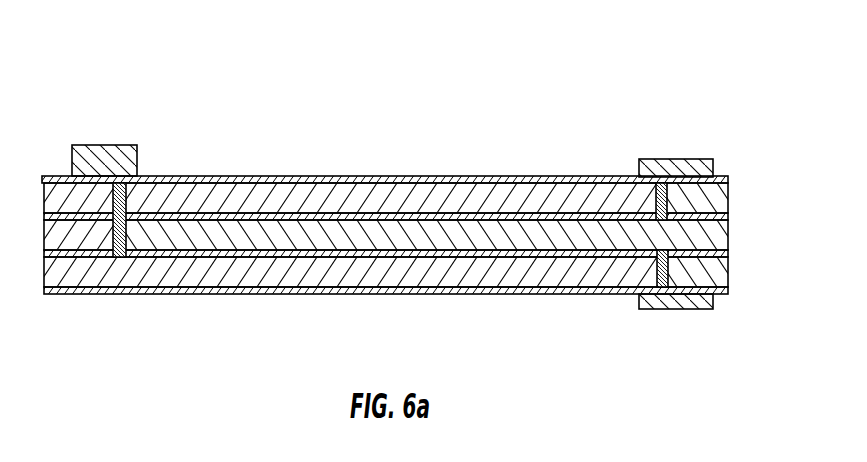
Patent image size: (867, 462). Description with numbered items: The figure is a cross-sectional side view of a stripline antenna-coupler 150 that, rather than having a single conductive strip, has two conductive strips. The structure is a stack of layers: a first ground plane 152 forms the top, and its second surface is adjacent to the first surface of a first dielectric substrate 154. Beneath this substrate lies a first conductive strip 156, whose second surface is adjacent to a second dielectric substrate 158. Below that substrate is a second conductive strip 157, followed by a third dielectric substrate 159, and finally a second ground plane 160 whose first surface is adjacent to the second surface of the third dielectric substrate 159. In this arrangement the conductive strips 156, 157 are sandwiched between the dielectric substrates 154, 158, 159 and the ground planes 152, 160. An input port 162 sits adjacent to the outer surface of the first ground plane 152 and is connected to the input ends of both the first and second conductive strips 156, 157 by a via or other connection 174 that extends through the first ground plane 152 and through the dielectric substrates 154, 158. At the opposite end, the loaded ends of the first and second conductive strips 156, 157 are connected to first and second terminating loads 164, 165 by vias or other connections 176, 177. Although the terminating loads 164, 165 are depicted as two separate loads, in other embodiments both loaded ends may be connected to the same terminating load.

The stripline antenna-coupler 150 is at (409, 202).
The first ground plane 152 is at (463, 177).
The first dielectric substrate 154 is at (261, 195).
The first conductive strip 156 is at (332, 217).
The second conductive strip 157 is at (556, 255).
The second dielectric substrate 158 is at (642, 238).
The third dielectric substrate 159 is at (240, 273).
The second ground plane 160 is at (417, 295).
The input port 162 is at (102, 145).
The first terminating load 164 is at (677, 162).
The second terminating load 165 is at (680, 300).
The via or other connection 174 is at (127, 198).
The via or other connection 176 is at (656, 200).
The via or other connection 177 is at (642, 283).